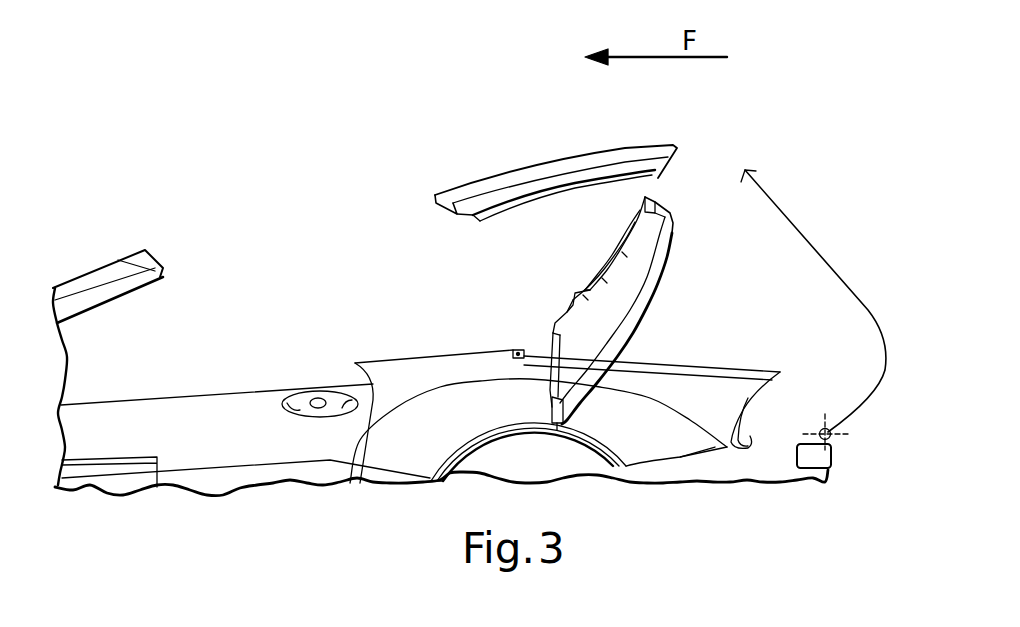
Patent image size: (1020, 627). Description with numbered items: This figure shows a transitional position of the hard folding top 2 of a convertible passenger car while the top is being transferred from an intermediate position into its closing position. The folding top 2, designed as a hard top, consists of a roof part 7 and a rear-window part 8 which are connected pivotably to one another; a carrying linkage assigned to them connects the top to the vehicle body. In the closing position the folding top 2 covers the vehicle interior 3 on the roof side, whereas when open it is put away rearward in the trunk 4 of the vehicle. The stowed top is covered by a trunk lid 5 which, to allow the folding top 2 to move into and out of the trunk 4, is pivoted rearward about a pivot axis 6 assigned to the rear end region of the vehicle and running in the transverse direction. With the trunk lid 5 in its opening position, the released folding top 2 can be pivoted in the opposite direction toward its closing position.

The folding top 2 is at (707, 150).
The vehicle interior 3 is at (162, 358).
The trunk 4 is at (818, 397).
The trunk lid 5 is at (798, 223).
The pivot axis 6 is at (832, 448).
The roof part 7 is at (478, 185).
The rear-window part 8 is at (648, 295).